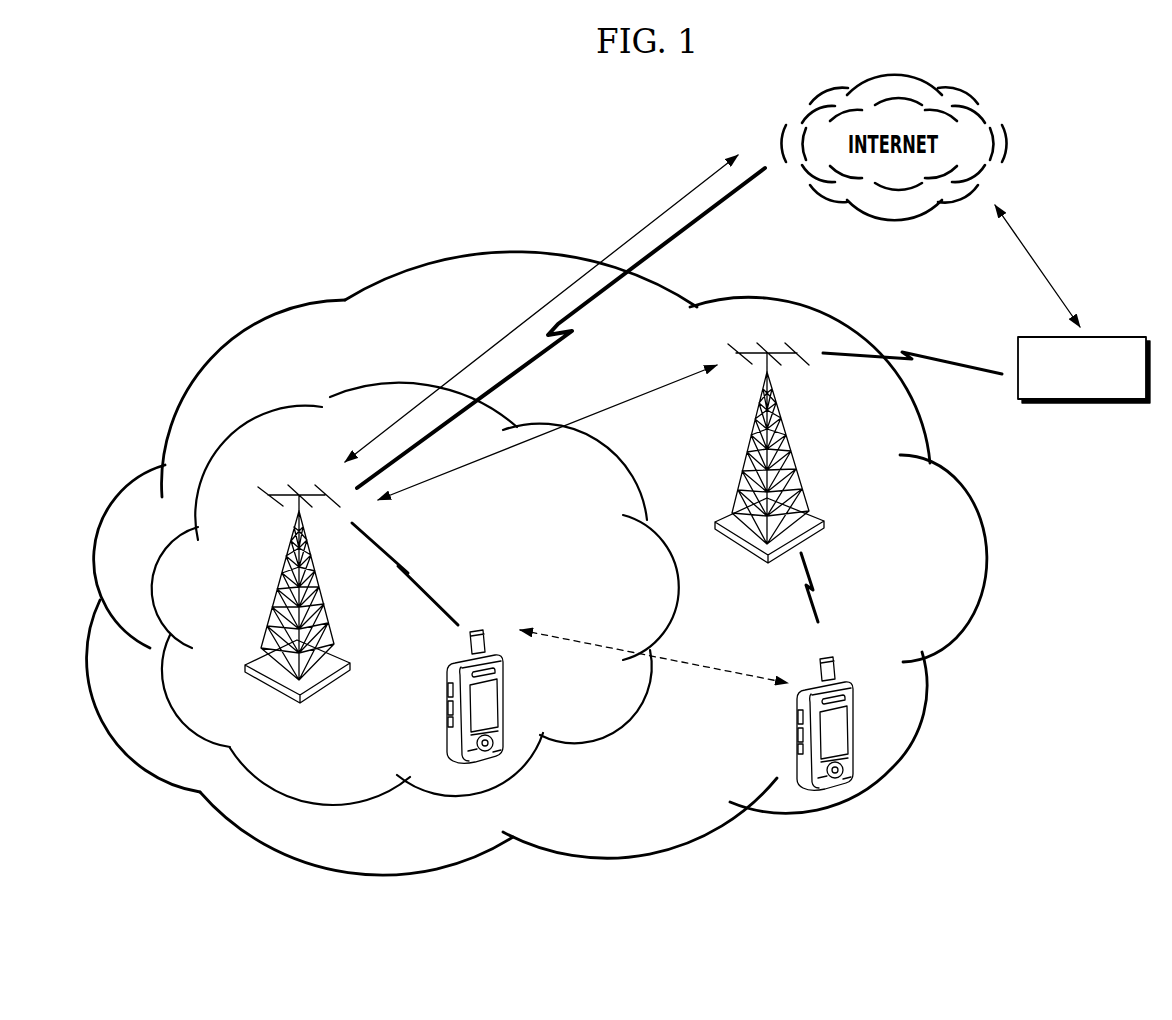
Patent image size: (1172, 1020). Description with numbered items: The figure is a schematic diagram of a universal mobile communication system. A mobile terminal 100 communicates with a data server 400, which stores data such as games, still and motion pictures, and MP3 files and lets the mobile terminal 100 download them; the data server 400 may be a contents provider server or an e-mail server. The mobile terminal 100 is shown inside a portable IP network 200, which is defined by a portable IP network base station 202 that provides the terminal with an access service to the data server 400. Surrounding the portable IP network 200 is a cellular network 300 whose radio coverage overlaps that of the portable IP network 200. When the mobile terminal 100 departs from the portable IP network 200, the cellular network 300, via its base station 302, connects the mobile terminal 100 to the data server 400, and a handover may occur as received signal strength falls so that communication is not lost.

The mobile terminal 100 is at (440, 726).
The portable IP network 200 is at (683, 609).
The portable IP network base station 202 is at (272, 592).
The cellular network 300 is at (1000, 557).
The base station 302 is at (796, 450).
The data server 400 is at (1118, 337).